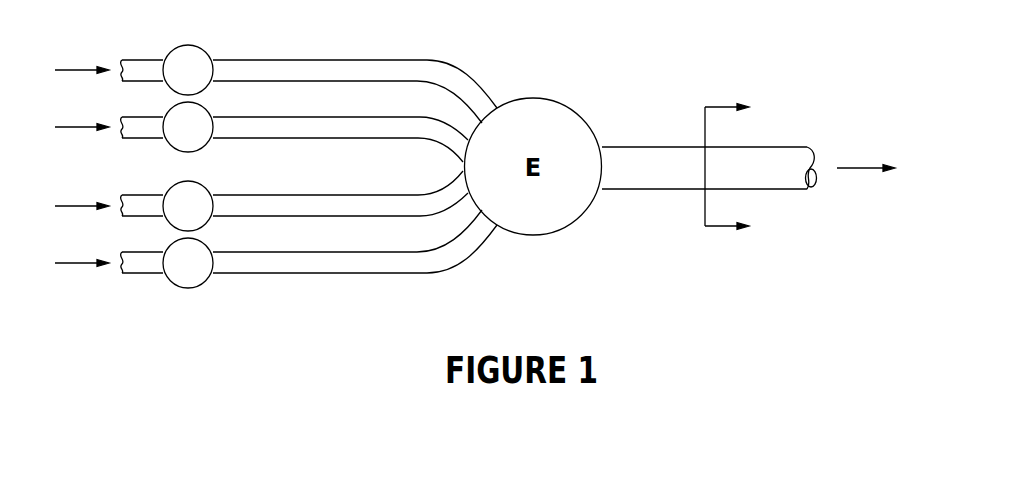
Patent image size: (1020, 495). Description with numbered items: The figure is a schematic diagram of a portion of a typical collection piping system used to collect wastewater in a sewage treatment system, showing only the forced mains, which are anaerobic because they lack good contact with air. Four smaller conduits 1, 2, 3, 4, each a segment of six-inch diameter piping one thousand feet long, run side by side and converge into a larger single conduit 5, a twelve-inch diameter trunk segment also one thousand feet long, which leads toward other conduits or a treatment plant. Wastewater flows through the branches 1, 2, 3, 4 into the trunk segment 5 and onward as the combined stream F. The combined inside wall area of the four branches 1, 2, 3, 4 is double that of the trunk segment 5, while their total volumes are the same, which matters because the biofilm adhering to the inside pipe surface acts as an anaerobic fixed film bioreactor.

The smaller conduit 1 is at (243, 72).
The smaller conduit 2 is at (240, 128).
The smaller conduit 3 is at (238, 207).
The smaller conduit 4 is at (240, 263).
The larger single conduit 5 is at (614, 152).
The product stream F is at (795, 136).